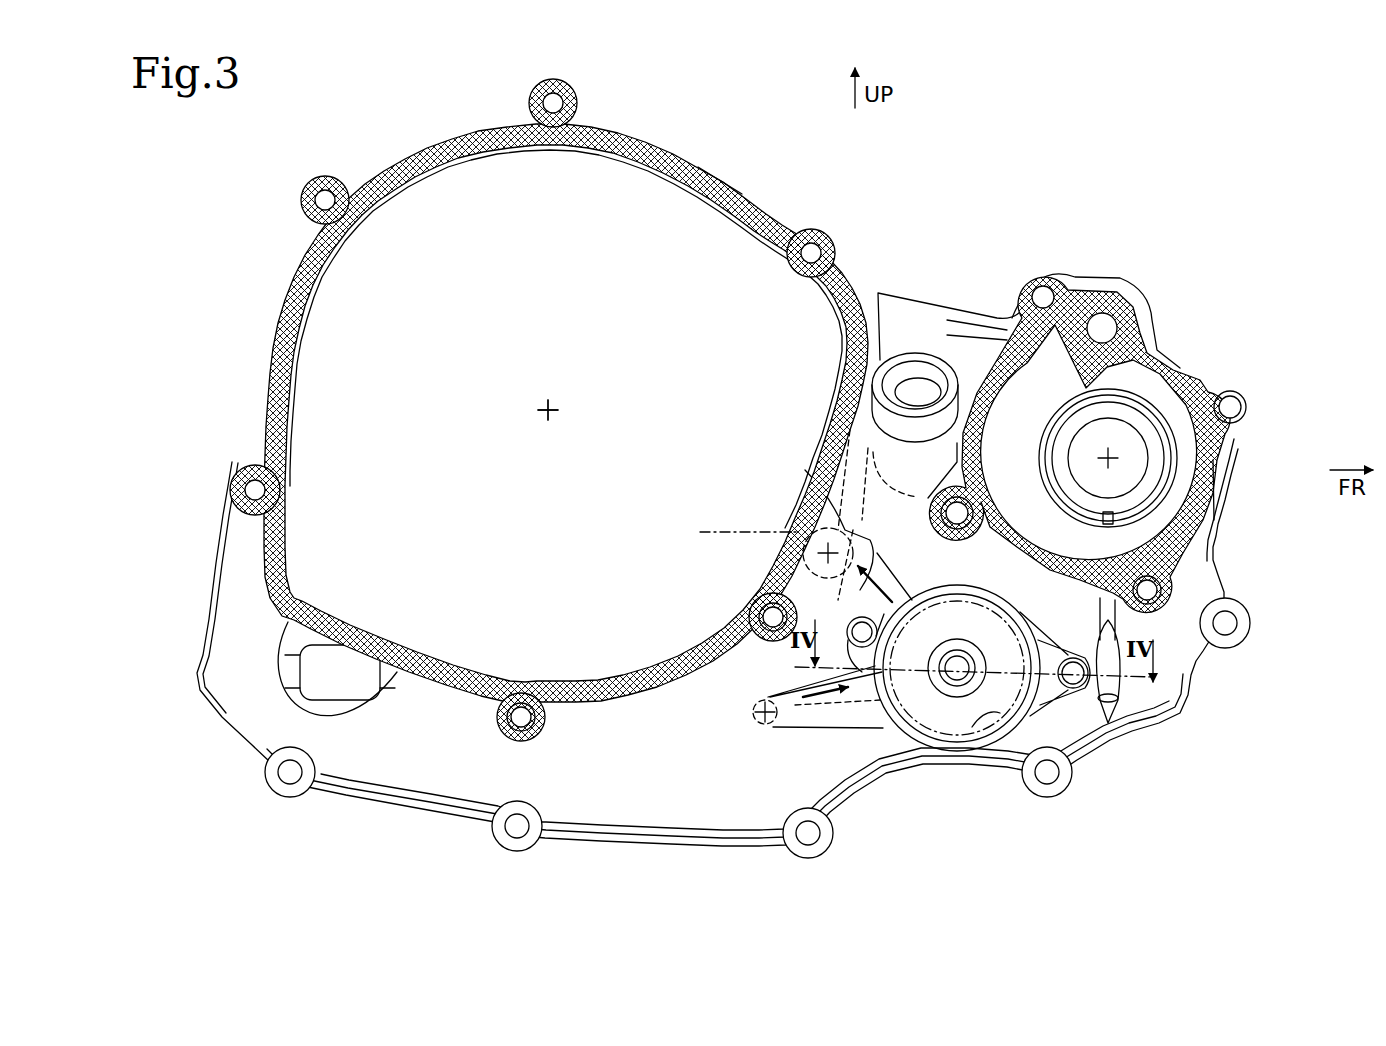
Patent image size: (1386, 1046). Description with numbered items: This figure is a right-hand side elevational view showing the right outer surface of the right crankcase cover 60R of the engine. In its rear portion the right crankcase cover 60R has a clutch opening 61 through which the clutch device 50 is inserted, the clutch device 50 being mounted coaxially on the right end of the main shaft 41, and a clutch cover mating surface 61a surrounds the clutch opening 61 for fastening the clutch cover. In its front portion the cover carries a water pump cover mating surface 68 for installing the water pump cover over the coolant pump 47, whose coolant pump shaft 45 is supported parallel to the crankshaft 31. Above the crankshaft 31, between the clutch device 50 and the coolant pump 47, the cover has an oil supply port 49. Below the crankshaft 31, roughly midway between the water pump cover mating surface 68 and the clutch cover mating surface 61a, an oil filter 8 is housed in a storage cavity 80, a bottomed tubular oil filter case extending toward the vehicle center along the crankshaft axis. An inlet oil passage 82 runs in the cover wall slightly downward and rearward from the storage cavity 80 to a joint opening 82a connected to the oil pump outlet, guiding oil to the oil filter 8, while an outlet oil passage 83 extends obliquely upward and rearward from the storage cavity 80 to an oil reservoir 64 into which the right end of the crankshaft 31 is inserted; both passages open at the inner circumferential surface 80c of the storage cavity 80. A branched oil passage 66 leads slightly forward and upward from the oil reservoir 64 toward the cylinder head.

The right crankcase cover 60R is at (1182, 262).
The clutch opening 61 is at (840, 366).
The clutch cover mating surface 61a is at (700, 166).
The main shaft 41 is at (545, 425).
The clutch device 50 is at (486, 568).
The oil supply port 49 is at (884, 352).
The branched oil passage 66 is at (886, 492).
The oil reservoir 64 is at (868, 522).
The crankshaft 31 is at (700, 532).
The outlet oil passage 83 is at (905, 582).
The coolant pump 47 is at (1168, 394).
The coolant pump shaft 45 is at (1108, 458).
The water pump cover mating surface 68 is at (1220, 508).
The storage cavity 80 is at (916, 748).
The inner circumferential surface 80c is at (975, 727).
The oil filter 8 is at (915, 746).
The inlet oil passage 82 is at (838, 708).
The joint opening 82a is at (755, 716).